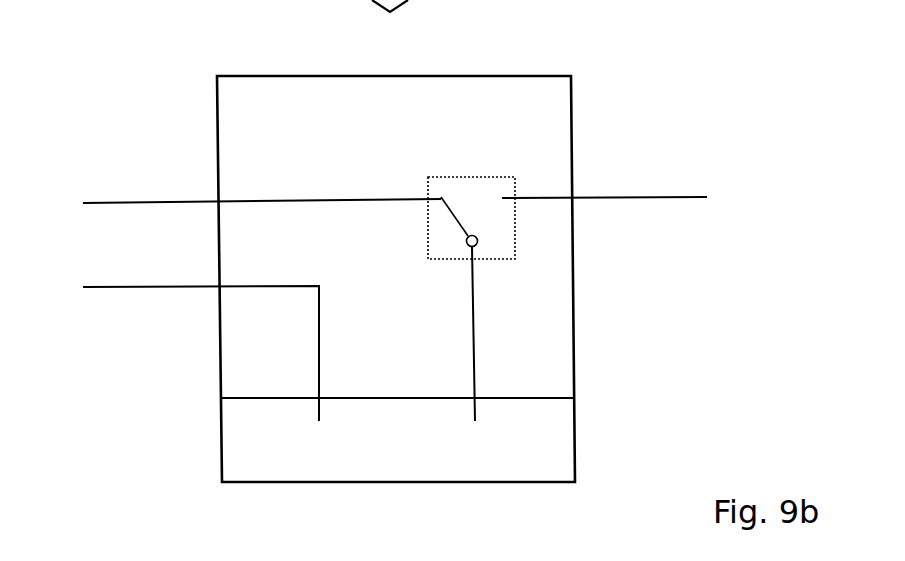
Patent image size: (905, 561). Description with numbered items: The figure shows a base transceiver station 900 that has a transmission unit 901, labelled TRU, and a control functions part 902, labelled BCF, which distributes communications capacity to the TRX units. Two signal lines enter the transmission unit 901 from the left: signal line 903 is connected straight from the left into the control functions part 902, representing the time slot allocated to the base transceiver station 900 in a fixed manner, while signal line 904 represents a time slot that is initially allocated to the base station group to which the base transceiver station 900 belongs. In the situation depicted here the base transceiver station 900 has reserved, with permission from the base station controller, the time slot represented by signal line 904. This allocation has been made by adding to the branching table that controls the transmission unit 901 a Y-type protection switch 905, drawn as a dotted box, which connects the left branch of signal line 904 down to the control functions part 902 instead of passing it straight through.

The base transceiver station 900 is at (153, 348).
The transmission unit 901 is at (547, 252).
The control functions part 902 is at (568, 431).
The signal line 903 is at (127, 287).
The signal line 904 is at (126, 203).
The Y-type protection switch 905 is at (502, 175).